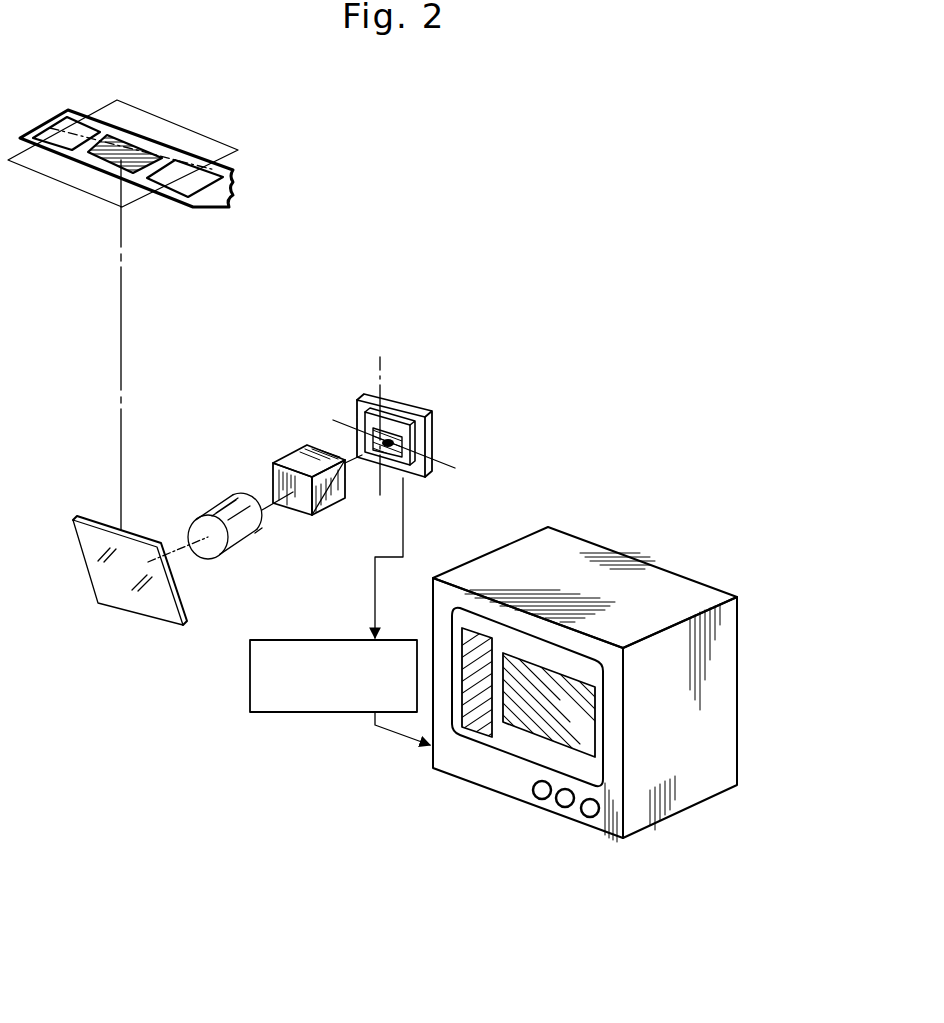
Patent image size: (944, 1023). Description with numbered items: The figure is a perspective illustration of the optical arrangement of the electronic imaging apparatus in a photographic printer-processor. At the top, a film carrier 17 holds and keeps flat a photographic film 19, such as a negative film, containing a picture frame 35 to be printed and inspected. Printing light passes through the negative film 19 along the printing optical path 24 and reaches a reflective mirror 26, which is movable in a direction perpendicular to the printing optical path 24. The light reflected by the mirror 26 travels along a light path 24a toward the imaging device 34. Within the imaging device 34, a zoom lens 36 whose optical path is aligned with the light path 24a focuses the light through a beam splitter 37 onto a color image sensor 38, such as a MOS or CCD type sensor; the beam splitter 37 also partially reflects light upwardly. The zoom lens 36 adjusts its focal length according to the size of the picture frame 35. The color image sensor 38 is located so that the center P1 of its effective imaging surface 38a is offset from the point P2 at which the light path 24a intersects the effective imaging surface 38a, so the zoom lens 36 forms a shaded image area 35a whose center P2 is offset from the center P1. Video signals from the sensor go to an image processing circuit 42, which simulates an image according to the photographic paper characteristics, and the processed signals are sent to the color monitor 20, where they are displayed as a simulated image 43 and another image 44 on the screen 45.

The film carrier 17 is at (75, 177).
The photographic film 19 is at (233, 167).
The picture frame 35 is at (145, 148).
The printing optical path 24 is at (120, 319).
The reflective mirror 26 is at (142, 607).
The light path 24a is at (188, 552).
The imaging device 34 is at (266, 494).
The zoom lens 36 is at (227, 492).
The beam splitter 37 is at (298, 502).
The color image sensor 38 is at (358, 398).
The effective imaging surface 38a is at (365, 443).
The image area 35a is at (403, 422).
The center of effective imaging surface P1 is at (383, 433).
The intersection point of light path P2 is at (407, 443).
The image processing circuit 42 is at (268, 713).
The color monitor 20 is at (607, 550).
The screen 45 is at (587, 770).
The another image 44 is at (478, 725).
The simulated image 43 is at (533, 730).